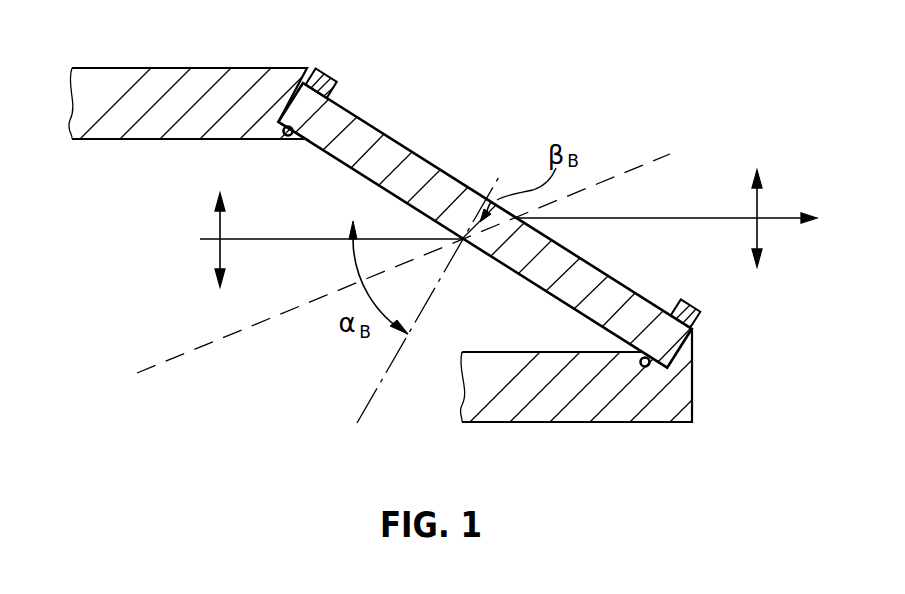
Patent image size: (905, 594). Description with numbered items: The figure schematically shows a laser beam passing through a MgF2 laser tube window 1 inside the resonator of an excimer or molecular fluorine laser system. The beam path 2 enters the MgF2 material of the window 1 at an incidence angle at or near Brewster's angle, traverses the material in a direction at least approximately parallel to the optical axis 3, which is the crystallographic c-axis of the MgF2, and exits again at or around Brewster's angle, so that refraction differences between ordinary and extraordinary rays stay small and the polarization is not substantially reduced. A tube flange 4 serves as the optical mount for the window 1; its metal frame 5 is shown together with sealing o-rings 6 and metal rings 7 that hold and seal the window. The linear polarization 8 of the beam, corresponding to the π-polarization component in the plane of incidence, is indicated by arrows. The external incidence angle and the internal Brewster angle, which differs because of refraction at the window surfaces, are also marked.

The laser tube window 1 is at (600, 314).
The beam path 2 is at (702, 216).
The optical axis 3 is at (210, 344).
The tube flange 4 is at (75, 283).
The metal frame 5 is at (233, 75).
The sealing o-rings 6 is at (282, 138).
The metal rings 7 is at (328, 64).
The linear polarization 8 is at (222, 222).